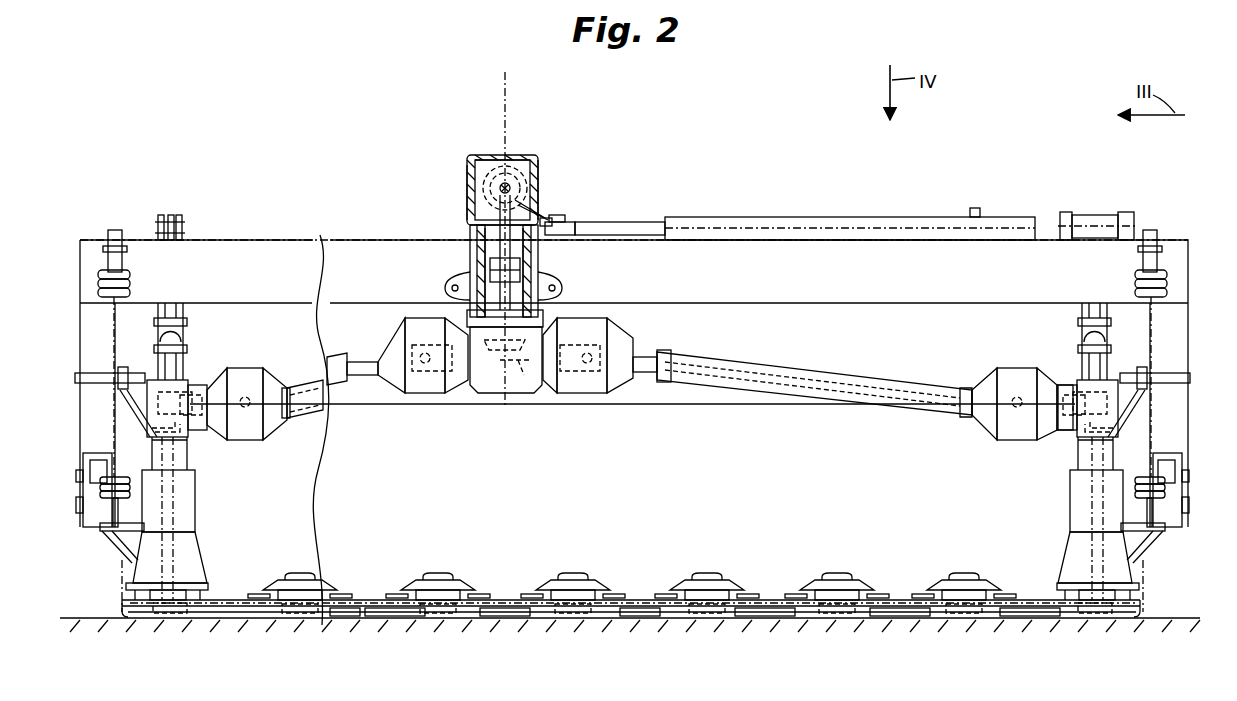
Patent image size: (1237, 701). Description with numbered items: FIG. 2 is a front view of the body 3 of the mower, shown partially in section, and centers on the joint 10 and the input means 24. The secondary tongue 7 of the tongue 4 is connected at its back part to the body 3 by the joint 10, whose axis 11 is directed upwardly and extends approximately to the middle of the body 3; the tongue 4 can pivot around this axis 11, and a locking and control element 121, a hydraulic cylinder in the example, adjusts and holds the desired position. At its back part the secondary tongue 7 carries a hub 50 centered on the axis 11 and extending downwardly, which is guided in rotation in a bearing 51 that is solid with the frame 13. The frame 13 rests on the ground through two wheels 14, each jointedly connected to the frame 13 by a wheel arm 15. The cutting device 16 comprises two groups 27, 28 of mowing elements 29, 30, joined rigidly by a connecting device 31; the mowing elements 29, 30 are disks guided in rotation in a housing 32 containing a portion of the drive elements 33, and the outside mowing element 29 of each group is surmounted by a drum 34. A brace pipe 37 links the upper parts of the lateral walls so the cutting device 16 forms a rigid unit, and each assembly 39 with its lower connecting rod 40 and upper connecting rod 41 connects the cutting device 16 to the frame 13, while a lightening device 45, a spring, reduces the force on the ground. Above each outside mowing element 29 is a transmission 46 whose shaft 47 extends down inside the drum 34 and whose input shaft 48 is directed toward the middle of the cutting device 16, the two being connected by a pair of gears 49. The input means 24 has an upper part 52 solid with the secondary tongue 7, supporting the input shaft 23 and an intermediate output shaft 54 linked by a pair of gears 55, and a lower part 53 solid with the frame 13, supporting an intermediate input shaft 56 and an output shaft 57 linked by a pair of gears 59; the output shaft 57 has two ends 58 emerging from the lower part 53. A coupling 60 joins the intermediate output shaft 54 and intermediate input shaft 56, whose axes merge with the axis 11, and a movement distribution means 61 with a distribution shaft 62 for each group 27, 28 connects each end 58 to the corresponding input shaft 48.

The body 3 is at (332, 160).
The tongue 4 is at (466, 160).
The secondary tongue 7 is at (521, 157).
The joint 10 is at (548, 268).
The axis 11 is at (508, 81).
The frame 13 is at (254, 250).
The wheels 14 is at (120, 565).
The wheel arm 15 is at (92, 510).
The cutting device 16 is at (495, 598).
The input shaft 23 is at (513, 186).
The input means 24 is at (490, 162).
The group 27 is at (385, 616).
The group 28 is at (650, 600).
The mowing element 29 is at (135, 586).
The mowing element 30 is at (288, 580).
The connecting device 31 is at (500, 616).
The housing 32 is at (347, 617).
The drive elements 33 is at (182, 622).
The drum 34 is at (190, 558).
The brace pipe 37 is at (665, 405).
The assembly 39 is at (192, 326).
The lower connecting rod 40 is at (130, 410).
The upper connecting rod 41 is at (162, 218).
The lightening device 45 is at (96, 284).
The transmission 46 is at (190, 438).
The shaft 47 is at (170, 488).
The input shaft 48 is at (213, 382).
The pair of gears 49 is at (183, 445).
The hub 50 is at (487, 232).
The bearing 51 is at (470, 265).
The upper part 52 is at (467, 183).
The lower part 53 is at (516, 400).
The intermediate output shaft 54 is at (528, 250).
The pair of gears 55 is at (526, 194).
The intermediate input shaft 56 is at (548, 326).
The output shaft 57 is at (492, 395).
The ends 58 is at (433, 393).
The pair of gears 59 is at (526, 395).
The coupling 60 is at (545, 285).
The movement distribution means 61 is at (301, 384).
The distribution shaft 62 is at (337, 393).
The locking and control element 121 is at (800, 220).